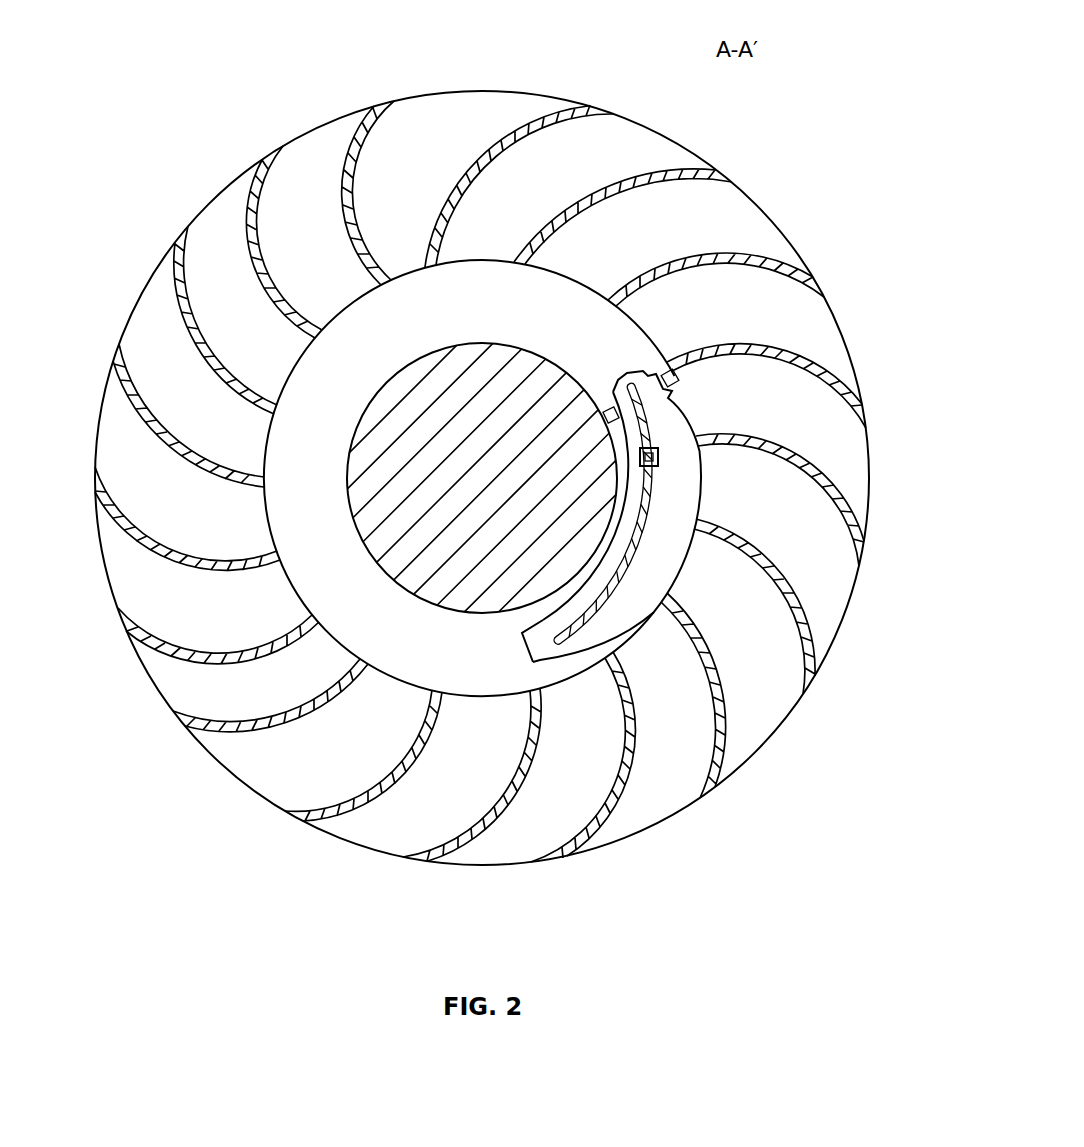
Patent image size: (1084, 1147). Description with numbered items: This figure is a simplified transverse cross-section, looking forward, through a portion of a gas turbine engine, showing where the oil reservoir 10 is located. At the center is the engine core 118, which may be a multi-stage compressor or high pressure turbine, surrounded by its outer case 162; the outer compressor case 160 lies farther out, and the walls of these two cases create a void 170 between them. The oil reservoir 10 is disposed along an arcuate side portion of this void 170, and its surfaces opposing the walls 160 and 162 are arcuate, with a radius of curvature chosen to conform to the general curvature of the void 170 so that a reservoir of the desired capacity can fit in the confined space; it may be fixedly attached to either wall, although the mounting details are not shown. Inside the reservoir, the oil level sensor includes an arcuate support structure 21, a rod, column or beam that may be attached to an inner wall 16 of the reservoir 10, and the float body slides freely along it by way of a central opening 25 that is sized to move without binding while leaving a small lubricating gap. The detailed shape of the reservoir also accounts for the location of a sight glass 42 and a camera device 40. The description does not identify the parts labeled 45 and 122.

The oil reservoir 10 is at (540, 622).
The inner wall 16 is at (583, 637).
The arcuate support structure 21 is at (600, 612).
The central opening 25 is at (660, 460).
The camera device 40 is at (677, 378).
The sight glass 42 is at (655, 370).
The second protrusion 45 is at (613, 410).
The engine core 118 is at (397, 563).
The outer ring 122 is at (241, 782).
The outer compressor case 160 is at (268, 447).
The outer case 162 is at (423, 683).
The void 170 is at (328, 511).